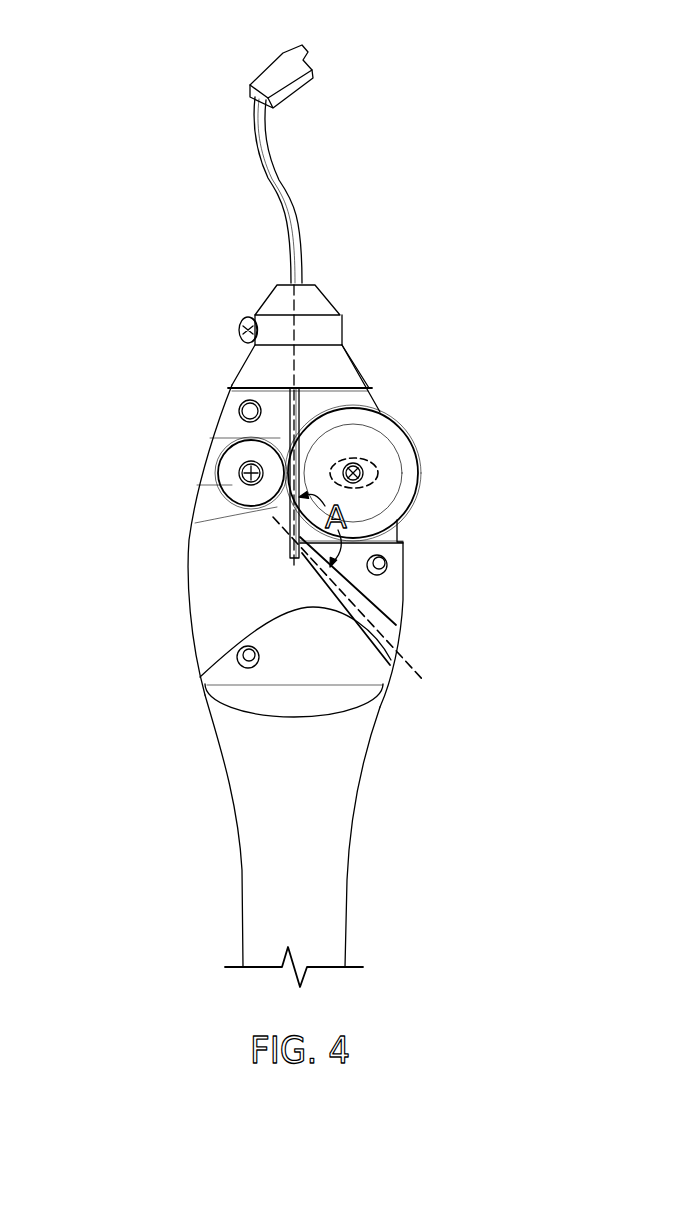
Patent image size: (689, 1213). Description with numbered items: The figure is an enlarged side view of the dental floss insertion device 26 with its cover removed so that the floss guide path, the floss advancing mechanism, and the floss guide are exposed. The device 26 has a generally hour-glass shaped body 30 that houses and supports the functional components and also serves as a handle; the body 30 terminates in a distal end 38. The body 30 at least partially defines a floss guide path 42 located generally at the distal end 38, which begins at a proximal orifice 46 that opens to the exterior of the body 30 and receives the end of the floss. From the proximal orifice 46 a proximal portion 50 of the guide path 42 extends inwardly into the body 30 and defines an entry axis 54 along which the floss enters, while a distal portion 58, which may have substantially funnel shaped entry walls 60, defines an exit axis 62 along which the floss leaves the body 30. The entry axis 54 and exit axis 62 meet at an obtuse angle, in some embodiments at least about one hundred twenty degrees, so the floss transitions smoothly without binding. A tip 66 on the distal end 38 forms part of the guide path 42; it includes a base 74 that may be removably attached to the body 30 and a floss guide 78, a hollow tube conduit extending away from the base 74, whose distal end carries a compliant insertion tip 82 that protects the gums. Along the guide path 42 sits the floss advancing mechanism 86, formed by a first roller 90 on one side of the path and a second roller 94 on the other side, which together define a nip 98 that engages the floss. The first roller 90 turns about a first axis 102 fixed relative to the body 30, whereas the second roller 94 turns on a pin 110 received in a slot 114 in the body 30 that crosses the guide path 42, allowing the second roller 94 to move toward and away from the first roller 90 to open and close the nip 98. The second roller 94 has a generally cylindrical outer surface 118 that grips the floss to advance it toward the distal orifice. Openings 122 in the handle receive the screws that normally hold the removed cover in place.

The dental floss insertion device 26 is at (97, 150).
The body 30 is at (236, 838).
The distal end 38 is at (392, 604).
The floss guide path 42 is at (254, 558).
The proximal orifice 46 is at (390, 655).
The proximal portion 50 is at (237, 657).
The entry axis 54 is at (398, 666).
The distal portion 58 is at (352, 388).
The funnel shaped entry walls 60 is at (287, 428).
The exit axis 62 is at (282, 303).
The tip 66 is at (328, 125).
The base 74 is at (315, 297).
The floss guide 78 is at (257, 156).
The insertion tip 82 is at (273, 66).
The floss advancing mechanism 86 is at (210, 535).
The first roller 90 is at (222, 485).
The second roller 94 is at (417, 493).
The nip 98 is at (272, 452).
The first axis 102 is at (239, 472).
The pin 110 is at (360, 464).
The slot 114 is at (380, 470).
The outer surface 118 is at (426, 503).
The openings 122 is at (388, 565).